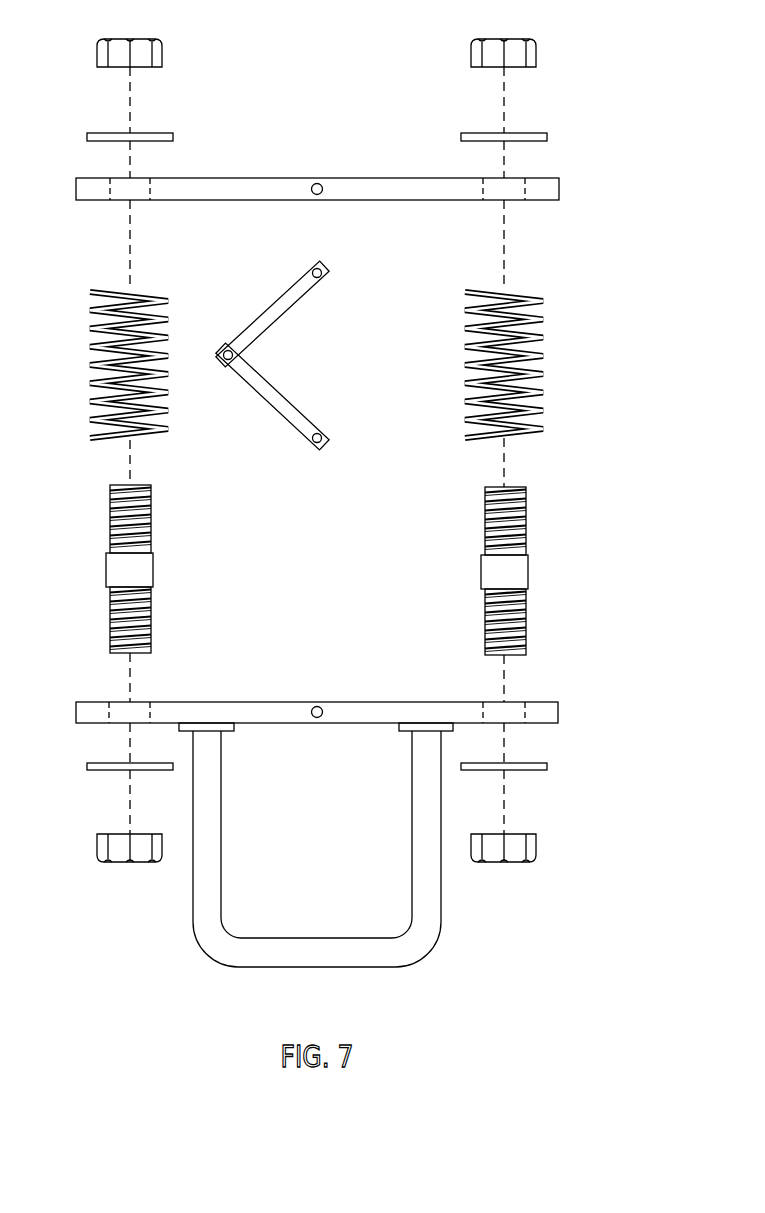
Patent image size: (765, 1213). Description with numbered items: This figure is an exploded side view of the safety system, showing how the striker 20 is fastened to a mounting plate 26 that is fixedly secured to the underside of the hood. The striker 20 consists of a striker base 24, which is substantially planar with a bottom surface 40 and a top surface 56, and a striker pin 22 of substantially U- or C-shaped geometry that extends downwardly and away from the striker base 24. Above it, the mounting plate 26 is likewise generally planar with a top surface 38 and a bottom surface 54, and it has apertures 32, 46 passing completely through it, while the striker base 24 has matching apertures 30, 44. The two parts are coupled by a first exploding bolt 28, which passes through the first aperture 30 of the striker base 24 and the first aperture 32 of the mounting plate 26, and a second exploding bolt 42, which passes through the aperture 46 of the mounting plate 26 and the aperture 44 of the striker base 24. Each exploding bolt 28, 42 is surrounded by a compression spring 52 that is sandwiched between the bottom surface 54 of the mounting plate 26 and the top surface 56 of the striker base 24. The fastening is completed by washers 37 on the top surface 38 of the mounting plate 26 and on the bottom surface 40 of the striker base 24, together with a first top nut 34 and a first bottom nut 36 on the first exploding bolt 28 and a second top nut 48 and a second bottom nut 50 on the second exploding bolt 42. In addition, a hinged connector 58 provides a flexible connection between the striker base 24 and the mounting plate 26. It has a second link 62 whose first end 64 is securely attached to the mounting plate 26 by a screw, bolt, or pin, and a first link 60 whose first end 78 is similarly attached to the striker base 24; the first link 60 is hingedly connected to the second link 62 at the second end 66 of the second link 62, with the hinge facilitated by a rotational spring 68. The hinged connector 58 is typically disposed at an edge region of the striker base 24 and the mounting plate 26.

The striker 20 is at (583, 703).
The striker pin 22 is at (358, 953).
The striker base 24 is at (301, 720).
The mounting plate 26 is at (302, 188).
The first exploding bolt 28 is at (152, 517).
The first aperture of the striker base 30 is at (319, 694).
The first aperture of the mounting plate 32 is at (320, 172).
The first top nut 34 is at (147, 39).
The first bottom nut 36 is at (103, 834).
The washers 37 is at (160, 133).
The top surface of the mounting plate 38 is at (320, 192).
The bottom surface of the striker base 40 is at (319, 722).
The second exploding bolt 42 is at (524, 517).
The aperture of the striker base 44 is at (515, 701).
The aperture of the mounting plate 46 is at (519, 178).
The second top nut 48 is at (522, 39).
The second bottom nut 50 is at (527, 834).
The compression spring 52 is at (151, 292).
The bottom surface of the mounting plate 54 is at (320, 192).
The top surface of the striker base 56 is at (319, 720).
The hinged connector 58 is at (281, 342).
The first link 60 is at (283, 398).
The second link 62 is at (298, 311).
The first end of the second link 64 is at (322, 270).
The second end of the second link 66 is at (211, 389).
The rotational spring 68 is at (222, 362).
The first end of the first link 78 is at (323, 433).